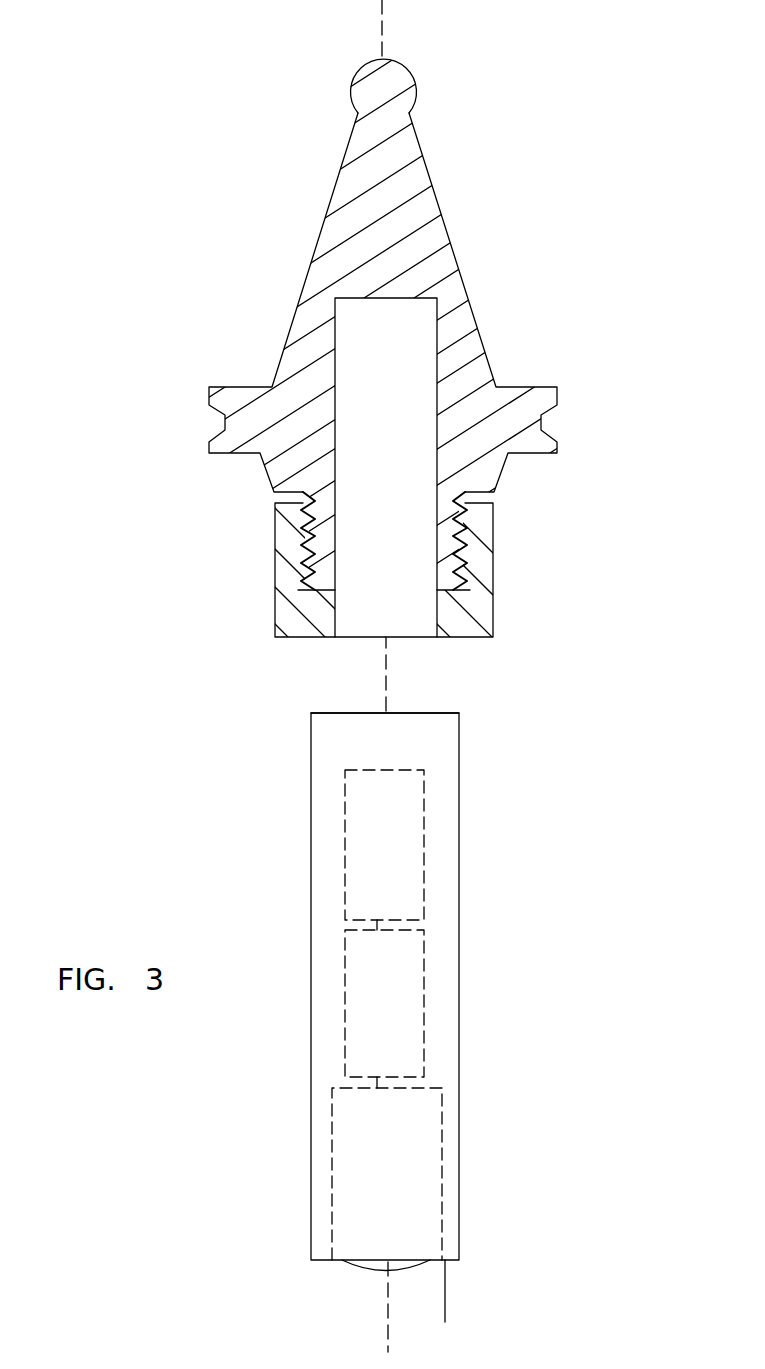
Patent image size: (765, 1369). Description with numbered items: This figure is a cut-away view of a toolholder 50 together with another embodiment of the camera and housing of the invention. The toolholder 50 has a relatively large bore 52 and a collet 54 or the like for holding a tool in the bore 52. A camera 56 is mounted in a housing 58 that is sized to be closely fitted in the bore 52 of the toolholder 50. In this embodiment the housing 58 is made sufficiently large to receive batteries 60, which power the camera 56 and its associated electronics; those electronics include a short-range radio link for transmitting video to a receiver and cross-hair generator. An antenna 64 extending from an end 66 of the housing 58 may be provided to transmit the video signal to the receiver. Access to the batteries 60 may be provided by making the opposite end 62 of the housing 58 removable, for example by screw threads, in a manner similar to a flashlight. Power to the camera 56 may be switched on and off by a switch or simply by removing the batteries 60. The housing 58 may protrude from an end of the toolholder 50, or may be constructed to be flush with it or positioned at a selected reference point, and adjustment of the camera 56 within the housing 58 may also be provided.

The toolholder 50 is at (488, 178).
The bore 52 is at (437, 407).
The collet 54 is at (493, 590).
The camera 56 is at (442, 1167).
The housing 58 is at (459, 803).
The batteries 60 is at (425, 865).
The end of housing 62 is at (442, 713).
The antenna 64 is at (445, 1297).
The end of housing 66 is at (317, 1260).